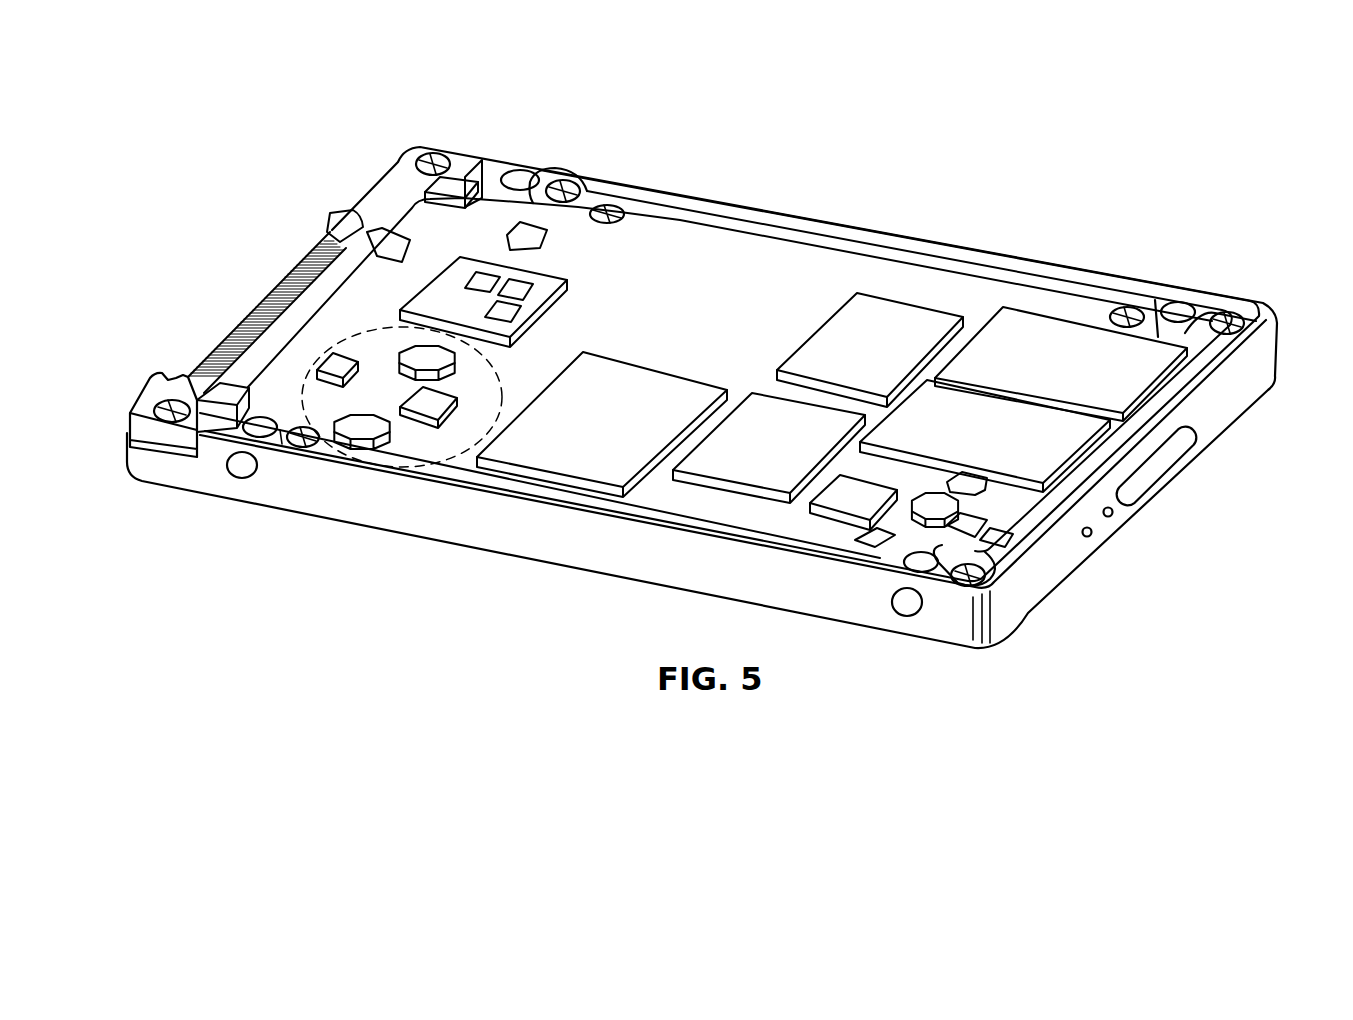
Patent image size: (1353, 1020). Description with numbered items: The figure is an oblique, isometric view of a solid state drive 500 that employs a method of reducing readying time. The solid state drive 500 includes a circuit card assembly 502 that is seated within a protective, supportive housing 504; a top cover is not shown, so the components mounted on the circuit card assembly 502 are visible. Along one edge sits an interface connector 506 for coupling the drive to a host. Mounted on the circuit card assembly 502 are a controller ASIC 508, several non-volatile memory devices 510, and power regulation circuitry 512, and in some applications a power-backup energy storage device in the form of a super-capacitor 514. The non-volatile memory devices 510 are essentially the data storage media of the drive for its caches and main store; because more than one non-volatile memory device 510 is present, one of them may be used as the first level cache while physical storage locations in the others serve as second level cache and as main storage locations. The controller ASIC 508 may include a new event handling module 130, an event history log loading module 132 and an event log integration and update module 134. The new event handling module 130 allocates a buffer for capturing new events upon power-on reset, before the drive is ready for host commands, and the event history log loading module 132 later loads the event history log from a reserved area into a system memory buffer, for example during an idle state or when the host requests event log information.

The solid state drive 500 is at (930, 152).
The circuit card assembly 502 is at (795, 253).
The housing 504 is at (447, 538).
The interface connector 506 is at (291, 269).
The controller ASIC 508 is at (472, 202).
The non-volatile memory device 510 is at (795, 428).
The power regulation circuitry 512 is at (371, 467).
The super-capacitor 514 is at (612, 427).
The new event handling module 130 is at (480, 283).
The event history log loading module 132 is at (517, 288).
The event log integration and update module 134 is at (546, 311).